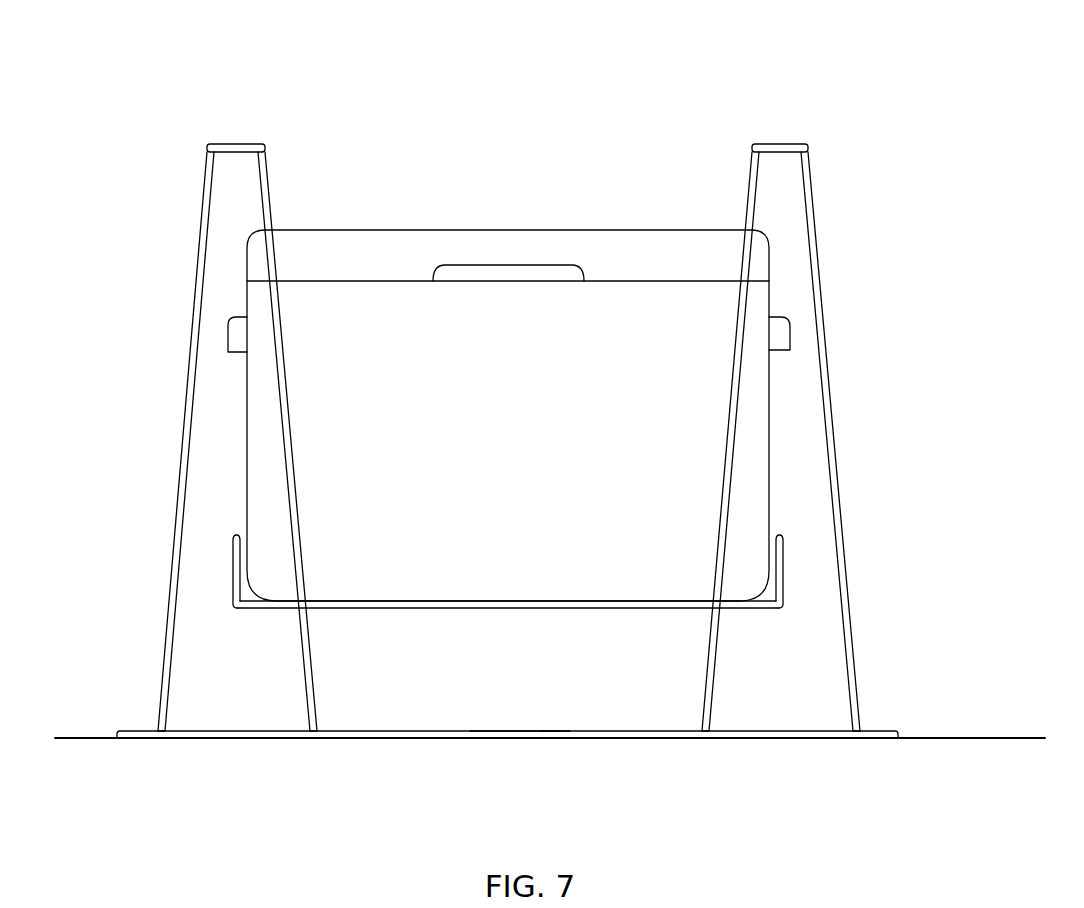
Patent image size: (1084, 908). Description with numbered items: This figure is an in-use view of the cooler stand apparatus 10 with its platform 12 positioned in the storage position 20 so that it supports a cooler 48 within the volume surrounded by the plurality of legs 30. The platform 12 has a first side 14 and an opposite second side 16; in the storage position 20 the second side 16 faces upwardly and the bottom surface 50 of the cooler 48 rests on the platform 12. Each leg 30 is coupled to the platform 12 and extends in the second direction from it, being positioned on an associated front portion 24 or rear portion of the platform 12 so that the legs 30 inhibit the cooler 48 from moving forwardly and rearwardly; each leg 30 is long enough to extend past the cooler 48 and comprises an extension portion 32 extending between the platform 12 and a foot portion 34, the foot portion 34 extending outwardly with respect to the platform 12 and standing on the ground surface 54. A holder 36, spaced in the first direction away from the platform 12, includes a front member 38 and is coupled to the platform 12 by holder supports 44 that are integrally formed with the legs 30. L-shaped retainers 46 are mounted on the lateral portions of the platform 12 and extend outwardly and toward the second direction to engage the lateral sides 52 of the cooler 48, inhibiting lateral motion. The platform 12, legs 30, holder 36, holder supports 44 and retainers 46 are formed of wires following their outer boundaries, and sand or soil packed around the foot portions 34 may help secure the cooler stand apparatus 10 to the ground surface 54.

The cooler stand apparatus 10 is at (112, 145).
The platform 12 is at (425, 635).
The first side 14 is at (474, 610).
The second side 16 is at (380, 601).
The storage position 20 is at (600, 640).
The front portion 24 is at (665, 610).
The legs 30 is at (175, 236).
The extension portion 32 is at (195, 325).
The foot portion 34 is at (236, 148).
The holder 36 is at (825, 680).
The front member 38 is at (548, 735).
The holder supports 44 is at (165, 658).
The retainers 46 is at (232, 562).
The cooler 48 is at (515, 175).
The bottom surface 50 is at (510, 603).
The lateral sides 52 is at (243, 438).
The ground surface 54 is at (930, 738).